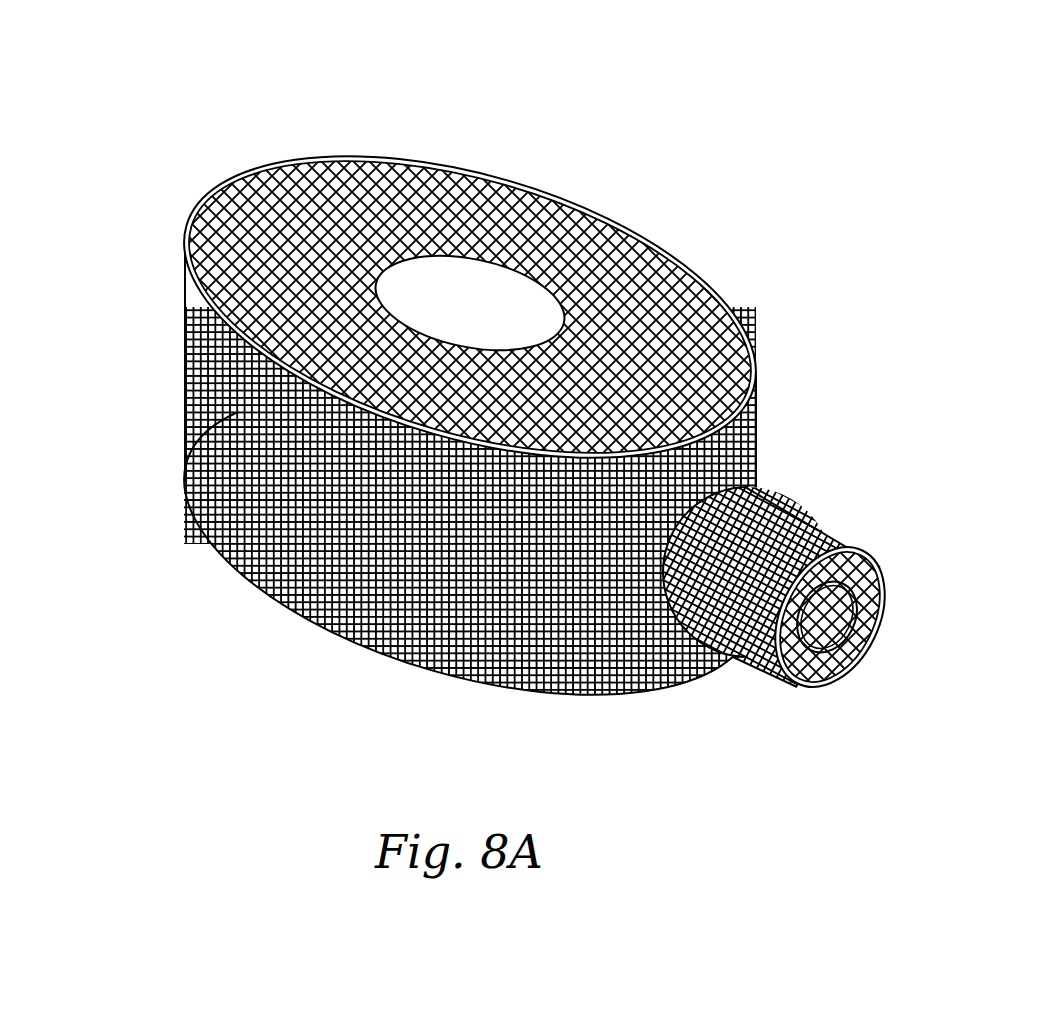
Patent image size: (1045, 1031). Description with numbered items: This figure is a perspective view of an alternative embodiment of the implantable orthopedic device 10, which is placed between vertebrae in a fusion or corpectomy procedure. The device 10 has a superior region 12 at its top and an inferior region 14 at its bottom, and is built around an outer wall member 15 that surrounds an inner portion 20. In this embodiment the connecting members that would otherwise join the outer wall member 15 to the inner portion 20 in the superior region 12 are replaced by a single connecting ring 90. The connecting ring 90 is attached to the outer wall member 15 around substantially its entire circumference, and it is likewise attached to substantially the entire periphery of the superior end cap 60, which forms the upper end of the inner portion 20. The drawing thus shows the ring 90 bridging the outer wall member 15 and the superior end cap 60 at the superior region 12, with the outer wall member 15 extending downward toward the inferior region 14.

The implantable orthopedic device 10 is at (475, 392).
The superior region 12 is at (184, 236).
The inferior region 14 is at (185, 492).
The outer wall member 15 is at (178, 377).
The inner portion 20 is at (464, 262).
The superior end cap 60 is at (418, 272).
The connecting ring 90 is at (644, 272).